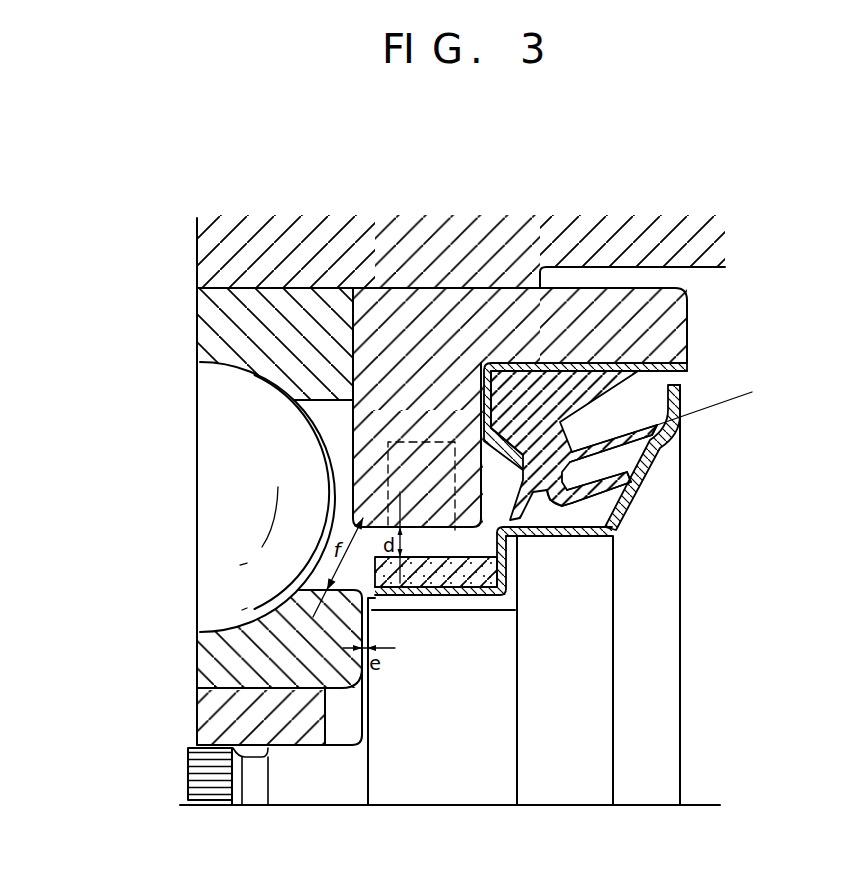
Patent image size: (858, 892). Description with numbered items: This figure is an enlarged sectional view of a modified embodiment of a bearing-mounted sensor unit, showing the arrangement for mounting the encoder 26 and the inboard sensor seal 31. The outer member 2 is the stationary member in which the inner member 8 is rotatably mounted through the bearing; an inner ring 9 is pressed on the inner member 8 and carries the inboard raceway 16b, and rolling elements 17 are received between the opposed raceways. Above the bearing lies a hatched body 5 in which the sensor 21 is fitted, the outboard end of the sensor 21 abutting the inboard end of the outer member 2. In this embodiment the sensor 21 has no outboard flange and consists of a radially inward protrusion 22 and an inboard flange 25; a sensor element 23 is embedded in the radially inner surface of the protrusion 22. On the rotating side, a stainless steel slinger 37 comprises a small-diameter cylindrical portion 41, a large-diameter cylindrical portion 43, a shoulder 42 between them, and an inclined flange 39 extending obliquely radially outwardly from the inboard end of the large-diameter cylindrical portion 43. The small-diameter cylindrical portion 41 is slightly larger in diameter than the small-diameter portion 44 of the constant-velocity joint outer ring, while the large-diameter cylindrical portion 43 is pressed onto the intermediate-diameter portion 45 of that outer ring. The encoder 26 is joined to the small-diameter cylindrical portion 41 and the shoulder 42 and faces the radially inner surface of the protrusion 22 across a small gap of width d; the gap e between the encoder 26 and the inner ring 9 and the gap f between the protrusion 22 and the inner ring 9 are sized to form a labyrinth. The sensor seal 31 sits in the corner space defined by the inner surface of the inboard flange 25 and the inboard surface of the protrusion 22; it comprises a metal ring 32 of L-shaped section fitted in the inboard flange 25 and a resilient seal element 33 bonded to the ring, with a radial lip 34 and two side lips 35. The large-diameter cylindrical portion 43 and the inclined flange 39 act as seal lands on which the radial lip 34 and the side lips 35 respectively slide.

The outer member 2 is at (242, 313).
The housing 5 is at (537, 250).
The inner member 8 is at (308, 663).
The inner ring 9 is at (314, 700).
The inboard raceway 16b is at (230, 630).
The rolling elements 17 is at (223, 534).
The sensor 21 is at (419, 297).
The protrusion 22 is at (383, 418).
The sensor element 23 is at (325, 462).
The inboard flange 25 is at (640, 300).
The encoder 26 is at (447, 597).
The sensor seal 31 is at (692, 362).
The metal ring 32 is at (582, 367).
The resilient seal element 33 is at (560, 393).
The radial lip 34 is at (540, 538).
The side lips 35 is at (652, 445).
The slinger 37 is at (685, 390).
The inclined flange 39 is at (625, 458).
The small-diameter cylindrical portion 41 is at (478, 597).
The shoulder 42 is at (510, 583).
The large-diameter cylindrical portion 43 is at (582, 538).
The small-diameter portion 44 is at (407, 760).
The intermediate-diameter portion 45 is at (568, 765).